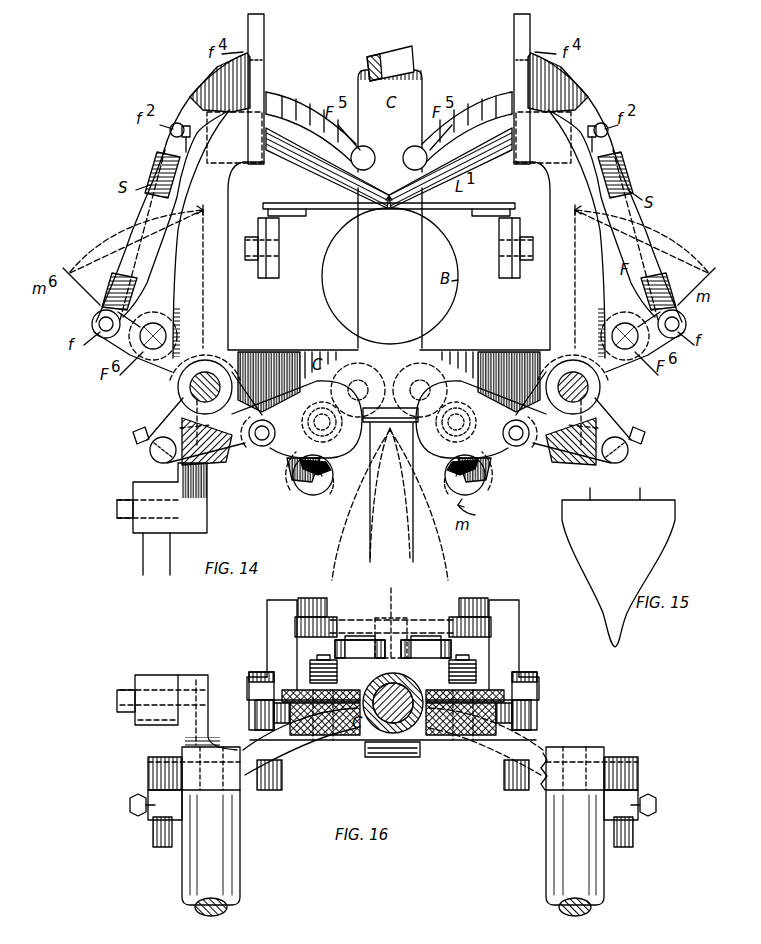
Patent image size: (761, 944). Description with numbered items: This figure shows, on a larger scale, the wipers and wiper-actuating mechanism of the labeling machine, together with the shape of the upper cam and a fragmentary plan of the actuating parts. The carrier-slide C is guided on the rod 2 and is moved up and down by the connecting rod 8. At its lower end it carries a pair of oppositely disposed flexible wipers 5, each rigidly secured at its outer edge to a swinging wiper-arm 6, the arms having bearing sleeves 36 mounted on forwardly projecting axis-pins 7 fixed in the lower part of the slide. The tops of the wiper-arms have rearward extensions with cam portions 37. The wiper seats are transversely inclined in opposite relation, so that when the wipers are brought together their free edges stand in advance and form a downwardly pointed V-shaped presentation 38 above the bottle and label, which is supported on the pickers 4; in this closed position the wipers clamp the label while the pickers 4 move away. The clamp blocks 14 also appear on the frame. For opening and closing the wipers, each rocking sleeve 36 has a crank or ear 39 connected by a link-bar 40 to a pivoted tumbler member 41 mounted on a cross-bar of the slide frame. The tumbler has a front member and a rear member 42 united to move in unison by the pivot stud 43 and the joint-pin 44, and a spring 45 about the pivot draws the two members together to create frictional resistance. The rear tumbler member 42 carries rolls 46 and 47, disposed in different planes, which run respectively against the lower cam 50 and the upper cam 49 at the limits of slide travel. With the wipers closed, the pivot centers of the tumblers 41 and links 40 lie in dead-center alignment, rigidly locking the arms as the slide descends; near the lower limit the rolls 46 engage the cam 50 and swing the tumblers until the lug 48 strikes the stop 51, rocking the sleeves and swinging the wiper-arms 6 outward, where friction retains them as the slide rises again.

In FIG. 14, the rod 2 is at (408, 62).
In FIG. 16, the rod 2 is at (393, 703).
In FIG. 14, the pickers 4 is at (268, 213).
In FIG. 14, the wipers 5 is at (320, 167).
In FIG. 14, the wiper-arms 6 is at (223, 313).
In FIG. 14, the axis-pins 7 is at (199, 388).
In FIG. 16, the axis-pins 7 is at (196, 906).
In FIG. 14, the connecting rod 8 is at (162, 519).
In FIG. 16, the connecting rod 8 is at (150, 680).
In FIG. 14, the clamp block 14 is at (279, 260).
In FIG. 14, the bearing sleeves 36 is at (180, 393).
In FIG. 16, the bearing sleeves 36 is at (216, 850).
In FIG. 14, the cam portions 37 is at (249, 20).
In FIG. 14, the V-shaped presentation 38 is at (389, 190).
In FIG. 14, the crank or ear 39 is at (150, 451).
In FIG. 16, the crank or ear 39 is at (150, 812).
In FIG. 14, the link-bar 40 is at (226, 465).
In FIG. 16, the link-bar 40 is at (283, 782).
In FIG. 14, the tumbler member 41 is at (478, 412).
In FIG. 16, the tumbler member 41 is at (318, 752).
In FIG. 16, the rear tumbler member 42 is at (283, 693).
In FIG. 14, the pivot stud 43 is at (389, 422).
In FIG. 16, the pivot stud 43 is at (446, 768).
In FIG. 14, the joint-pin 44 is at (263, 447).
In FIG. 16, the joint-pin 44 is at (257, 722).
In FIG. 16, the spring 45 is at (310, 668).
In FIG. 14, the roll 46 is at (345, 372).
In FIG. 16, the roll 46 is at (360, 640).
In FIG. 14, the roll 47 is at (308, 490).
In FIG. 16, the roll 47 is at (322, 618).
In FIG. 14, the lug 48 is at (328, 471).
In FIG. 15, the upper cam 49 is at (618, 567).
In FIG. 16, the upper cam 49 is at (406, 633).
In FIG. 14, the lower cam 50 is at (450, 540).
In FIG. 16, the lower cam 50 is at (404, 619).
In FIG. 14, the stop 51 is at (390, 414).
In FIG. 16, the stop 51 is at (390, 757).